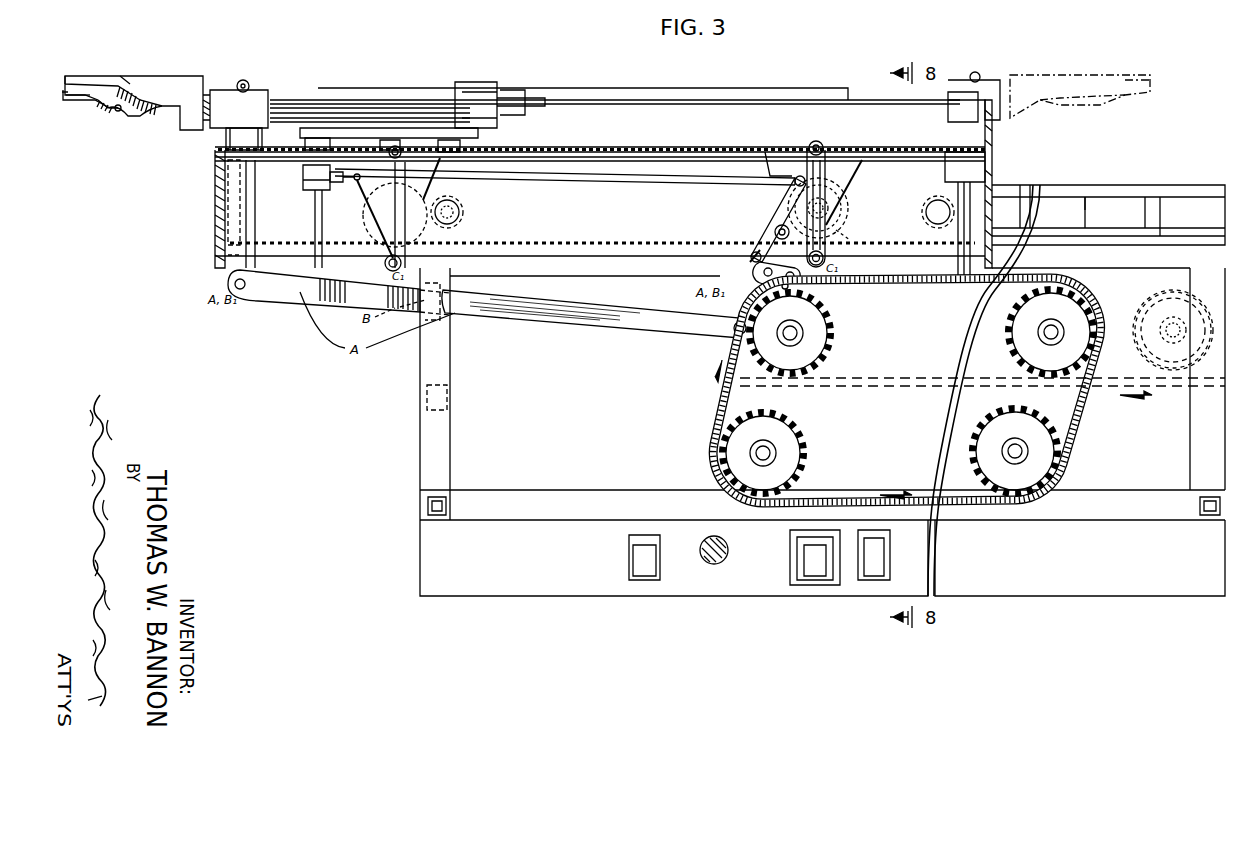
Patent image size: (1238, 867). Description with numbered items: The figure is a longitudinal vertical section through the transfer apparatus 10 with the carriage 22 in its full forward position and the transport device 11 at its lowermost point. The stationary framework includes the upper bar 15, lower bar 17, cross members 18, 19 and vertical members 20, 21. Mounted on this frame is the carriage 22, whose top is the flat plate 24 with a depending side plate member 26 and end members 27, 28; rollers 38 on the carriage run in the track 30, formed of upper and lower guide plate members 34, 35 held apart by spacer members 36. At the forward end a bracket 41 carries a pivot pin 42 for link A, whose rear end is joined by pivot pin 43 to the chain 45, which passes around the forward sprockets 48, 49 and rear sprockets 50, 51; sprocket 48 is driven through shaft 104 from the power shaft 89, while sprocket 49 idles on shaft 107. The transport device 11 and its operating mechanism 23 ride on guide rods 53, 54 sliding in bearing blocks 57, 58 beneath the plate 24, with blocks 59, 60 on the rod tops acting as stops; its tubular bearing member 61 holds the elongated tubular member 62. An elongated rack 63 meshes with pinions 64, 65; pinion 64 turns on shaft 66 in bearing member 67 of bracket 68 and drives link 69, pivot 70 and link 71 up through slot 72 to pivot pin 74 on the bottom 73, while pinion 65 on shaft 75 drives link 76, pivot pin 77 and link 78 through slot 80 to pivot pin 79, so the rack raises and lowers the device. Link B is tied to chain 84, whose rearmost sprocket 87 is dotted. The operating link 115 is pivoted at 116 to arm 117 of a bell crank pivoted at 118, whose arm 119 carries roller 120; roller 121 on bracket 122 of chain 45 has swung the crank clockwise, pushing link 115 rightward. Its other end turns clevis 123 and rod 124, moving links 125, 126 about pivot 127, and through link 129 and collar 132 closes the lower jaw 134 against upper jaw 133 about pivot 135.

The transfer apparatus 10 is at (400, 458).
The transport device 11 is at (159, 76).
The upper elongated horizontally extending bar 15 is at (653, 277).
The lower horizontally spaced-apart bar 17 is at (551, 522).
The cross member 18 is at (441, 520).
The cross member 19 is at (1206, 517).
The vertical member 20 is at (450, 450).
The vertical member 21 is at (1194, 450).
The carriage 22 is at (188, 224).
The operating mechanism for the transport device 23 is at (200, 62).
The upper flat plate 24 is at (648, 148).
The side plate member 26 is at (593, 160).
The end member 27 is at (214, 192).
The end member 28 is at (992, 169).
The track 30 is at (1163, 178).
The upper guide plate member 34 is at (1123, 184).
The lower guide plate member 35 is at (1166, 225).
The spacer member 36 is at (1087, 194).
The roller 38 is at (460, 209).
The bracket 41 is at (225, 244).
The pivot pin 42 is at (224, 284).
The pivot pin 43 is at (730, 331).
The chain 45 is at (710, 405).
The sprocket 48 is at (802, 439).
The sprocket 49 is at (834, 310).
The rear sprocket 50 is at (972, 444).
The rear sprocket 51 is at (1006, 336).
The guide rod 53 is at (255, 217).
The guide rod 54 is at (956, 242).
The bearing block 57 is at (252, 171).
The bearing block 58 is at (946, 166).
The block 59 is at (228, 144).
The block 60 is at (976, 127).
The tubular bearing member 61 is at (256, 92).
The elongated tubular member 62 is at (357, 100).
The elongated rack 63 is at (638, 243).
The pinion 64 is at (848, 201).
The pinion 65 is at (458, 222).
The shaft 66 is at (848, 217).
The bearing member 67 is at (850, 186).
The bracket 68 is at (856, 163).
The link 69 is at (848, 241).
The pivot 70 is at (826, 260).
The link 71 is at (782, 206).
The slot 72 is at (829, 150).
The bottom 73 is at (695, 148).
The pivot pin 74 is at (813, 141).
The shaft 75 is at (365, 227).
The link 76 is at (383, 266).
The pivot pin 77 is at (433, 292).
The link 78 is at (425, 193).
The pivot pin 79 is at (396, 146).
The slot 80 is at (416, 141).
The chain 84 is at (893, 388).
The rearmost sprocket 87 is at (1130, 365).
The power shaft 89 is at (728, 550).
The shaft 104 is at (750, 454).
The shaft 107 is at (803, 334).
The operating link 115 is at (586, 182).
The pivotal connection 116 is at (785, 172).
The arm of bell crank lever 117 is at (794, 184).
The pivot 118 is at (774, 230).
The arm of bell crank lever 119 is at (750, 254).
The roller 120 is at (750, 261).
The roller 121 is at (760, 277).
The bracket 122 is at (786, 290).
The clevis arrangement 123 is at (330, 183).
The vertically disposed rod 124 is at (312, 231).
The link 125 is at (310, 128).
The link 126 is at (447, 151).
The pivot 127 is at (322, 128).
The link 129 is at (497, 116).
The collar 132 is at (472, 82).
The upper jaw 133 is at (126, 76).
The lower jaw 134 is at (80, 101).
The pivot 135 is at (118, 111).